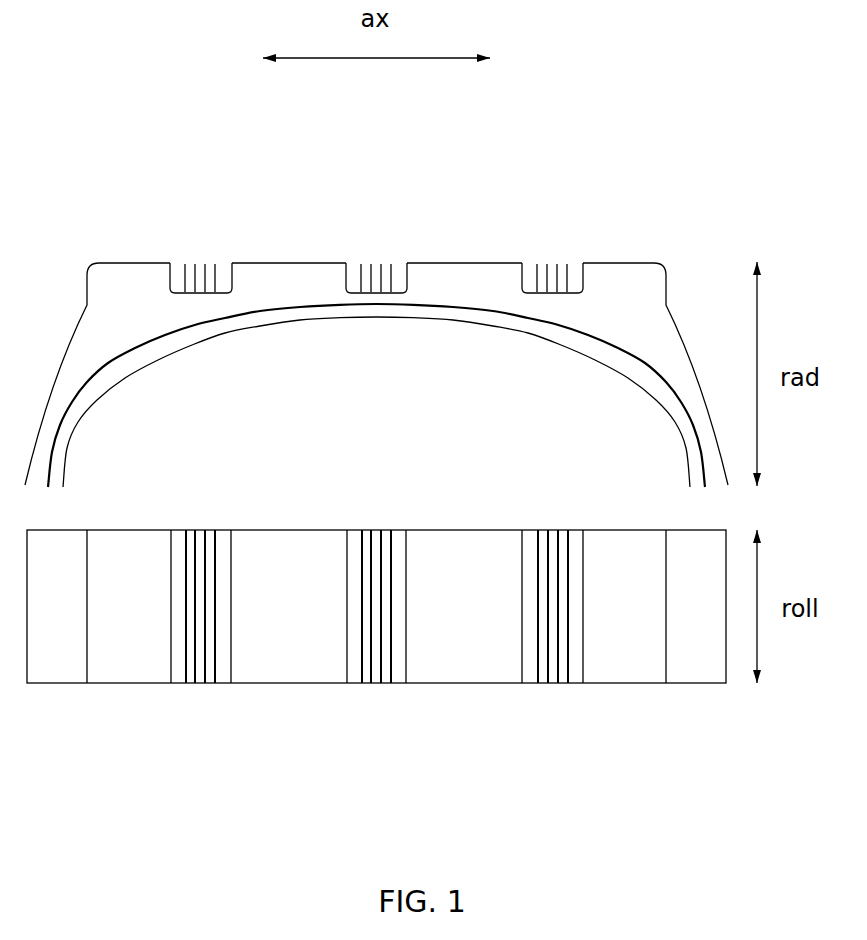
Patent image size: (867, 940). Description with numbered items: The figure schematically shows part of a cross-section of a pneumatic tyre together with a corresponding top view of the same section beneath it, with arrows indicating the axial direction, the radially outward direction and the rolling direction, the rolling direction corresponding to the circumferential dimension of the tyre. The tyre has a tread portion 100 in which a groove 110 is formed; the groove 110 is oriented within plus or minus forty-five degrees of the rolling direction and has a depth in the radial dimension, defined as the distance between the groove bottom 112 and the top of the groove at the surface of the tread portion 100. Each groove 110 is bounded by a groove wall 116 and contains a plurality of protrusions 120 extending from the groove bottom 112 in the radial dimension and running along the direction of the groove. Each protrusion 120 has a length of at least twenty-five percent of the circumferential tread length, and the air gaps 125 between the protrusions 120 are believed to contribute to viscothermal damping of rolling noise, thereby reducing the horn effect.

The tread portion 100 is at (637, 265).
The groove 110 is at (223, 267).
The groove bottom 112 is at (212, 267).
The groove wall 116 is at (395, 267).
The protrusion 120 is at (187, 267).
The air gap 125 is at (191, 262).